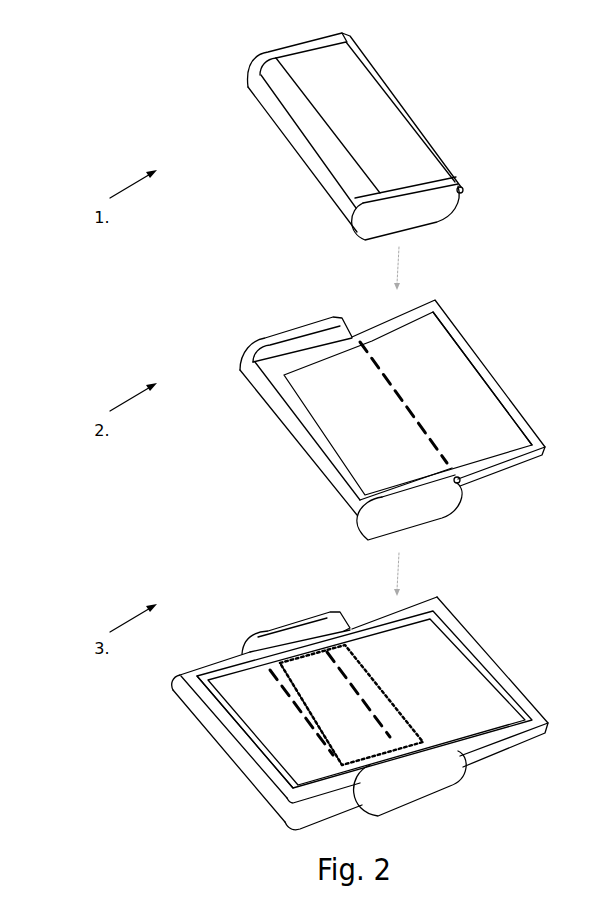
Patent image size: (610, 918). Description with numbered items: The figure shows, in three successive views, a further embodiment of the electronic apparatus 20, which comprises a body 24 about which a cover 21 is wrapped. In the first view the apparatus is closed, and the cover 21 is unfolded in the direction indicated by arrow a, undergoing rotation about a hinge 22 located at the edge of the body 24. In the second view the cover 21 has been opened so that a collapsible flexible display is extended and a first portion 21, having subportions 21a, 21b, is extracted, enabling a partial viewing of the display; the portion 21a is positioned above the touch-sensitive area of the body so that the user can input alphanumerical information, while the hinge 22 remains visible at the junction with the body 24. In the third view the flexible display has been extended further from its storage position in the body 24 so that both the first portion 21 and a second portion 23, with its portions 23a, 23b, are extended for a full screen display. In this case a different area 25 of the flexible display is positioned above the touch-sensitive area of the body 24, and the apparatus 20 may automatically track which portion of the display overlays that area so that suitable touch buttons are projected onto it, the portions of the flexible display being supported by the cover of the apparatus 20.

The electronic apparatus 20 is at (68, 79).
The cover 21 is at (387, 140).
The portion 21a is at (303, 380).
The portion 21b is at (435, 352).
The hinge 22 is at (463, 188).
The second portion 23 is at (248, 687).
The portion 23a is at (230, 682).
The portion 23b is at (302, 675).
The body 24 is at (427, 227).
The area 25 is at (403, 717).
The arrow a is at (443, 23).